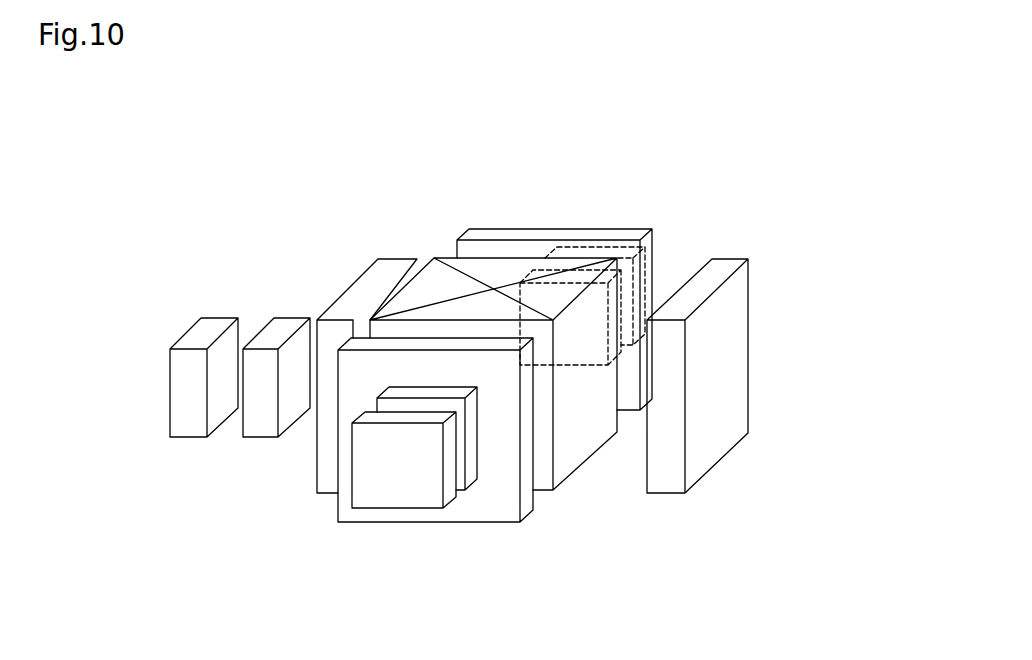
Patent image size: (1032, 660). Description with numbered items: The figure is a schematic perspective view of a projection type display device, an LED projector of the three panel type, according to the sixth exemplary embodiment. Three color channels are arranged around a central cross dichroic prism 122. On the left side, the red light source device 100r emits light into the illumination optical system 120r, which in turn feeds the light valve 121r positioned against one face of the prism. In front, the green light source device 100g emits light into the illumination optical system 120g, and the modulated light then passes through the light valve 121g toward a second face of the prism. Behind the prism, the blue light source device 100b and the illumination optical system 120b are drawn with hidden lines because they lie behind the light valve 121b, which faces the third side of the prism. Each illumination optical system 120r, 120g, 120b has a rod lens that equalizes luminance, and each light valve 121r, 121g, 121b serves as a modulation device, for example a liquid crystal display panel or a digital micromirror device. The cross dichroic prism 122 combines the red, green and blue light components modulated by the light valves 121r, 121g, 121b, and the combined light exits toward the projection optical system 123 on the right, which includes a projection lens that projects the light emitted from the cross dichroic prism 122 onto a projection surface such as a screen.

The red light source device 100r is at (200, 334).
The illumination optical system 120r is at (268, 333).
The light valve 121r is at (375, 283).
The cross dichroic prism 122 is at (518, 280).
The illumination optical system 120g is at (472, 468).
The light valve 121g is at (527, 470).
The green light source device 100g is at (448, 487).
The light valve 121b is at (528, 235).
The illumination optical system 120b is at (597, 257).
The blue light source device 100b is at (586, 252).
The projection optical system 123 is at (760, 231).